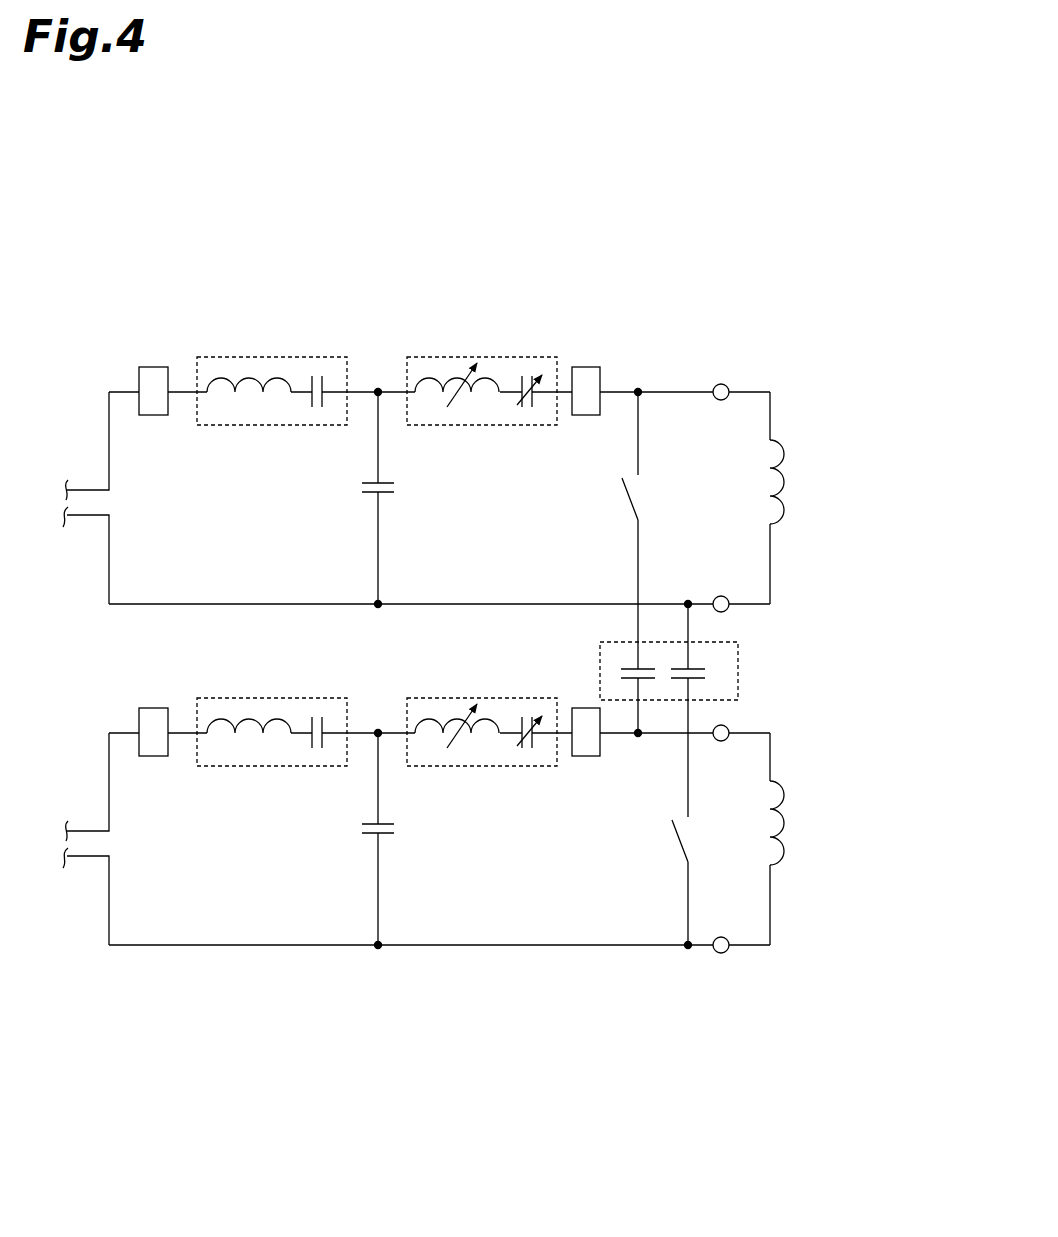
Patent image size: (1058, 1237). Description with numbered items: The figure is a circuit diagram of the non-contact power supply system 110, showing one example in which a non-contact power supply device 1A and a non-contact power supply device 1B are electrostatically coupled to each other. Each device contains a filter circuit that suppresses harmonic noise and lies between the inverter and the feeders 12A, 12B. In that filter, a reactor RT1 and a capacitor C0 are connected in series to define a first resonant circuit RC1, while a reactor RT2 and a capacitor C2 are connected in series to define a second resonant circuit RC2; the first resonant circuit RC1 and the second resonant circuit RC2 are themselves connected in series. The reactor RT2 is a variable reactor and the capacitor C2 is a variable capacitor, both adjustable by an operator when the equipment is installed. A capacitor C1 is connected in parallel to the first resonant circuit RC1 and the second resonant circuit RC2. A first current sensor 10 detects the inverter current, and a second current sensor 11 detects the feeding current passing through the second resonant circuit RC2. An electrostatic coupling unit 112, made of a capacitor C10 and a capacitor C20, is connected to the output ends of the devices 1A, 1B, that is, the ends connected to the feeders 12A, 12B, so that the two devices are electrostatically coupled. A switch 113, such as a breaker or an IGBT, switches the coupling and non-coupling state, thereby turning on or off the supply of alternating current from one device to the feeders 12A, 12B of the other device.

The first current sensor 10 is at (150, 365).
The first resonant circuit RC1 is at (242, 355).
The reactor RT1 is at (232, 396).
The capacitor C0 is at (323, 385).
The capacitor C1 is at (367, 497).
The second resonant circuit RC2 is at (452, 355).
The reactor RT2 is at (448, 399).
The capacitor C2 is at (520, 387).
The second current sensor 11 is at (583, 367).
The switch 113 is at (630, 497).
The feeder 12A is at (770, 413).
The feeder 12B is at (770, 918).
The electrostatic coupling unit 112 is at (738, 688).
The capacitor C10 is at (630, 664).
The capacitor C20 is at (698, 662).
The non-contact power supply system 110 is at (771, 224).
The non-contact power supply device 1A is at (749, 337).
The non-contact power supply device 1B is at (760, 989).